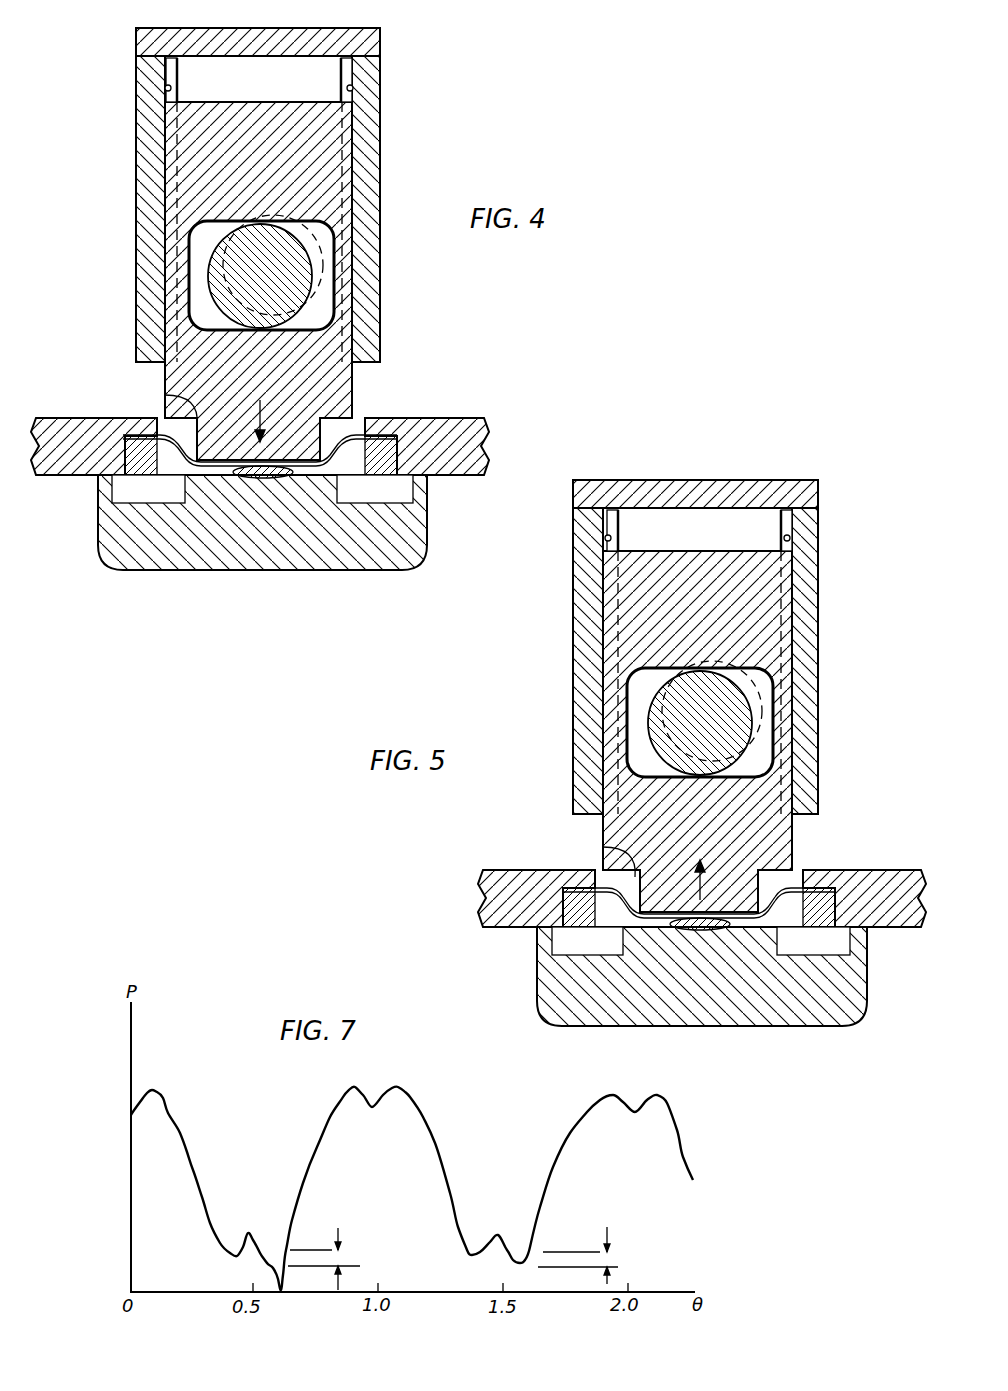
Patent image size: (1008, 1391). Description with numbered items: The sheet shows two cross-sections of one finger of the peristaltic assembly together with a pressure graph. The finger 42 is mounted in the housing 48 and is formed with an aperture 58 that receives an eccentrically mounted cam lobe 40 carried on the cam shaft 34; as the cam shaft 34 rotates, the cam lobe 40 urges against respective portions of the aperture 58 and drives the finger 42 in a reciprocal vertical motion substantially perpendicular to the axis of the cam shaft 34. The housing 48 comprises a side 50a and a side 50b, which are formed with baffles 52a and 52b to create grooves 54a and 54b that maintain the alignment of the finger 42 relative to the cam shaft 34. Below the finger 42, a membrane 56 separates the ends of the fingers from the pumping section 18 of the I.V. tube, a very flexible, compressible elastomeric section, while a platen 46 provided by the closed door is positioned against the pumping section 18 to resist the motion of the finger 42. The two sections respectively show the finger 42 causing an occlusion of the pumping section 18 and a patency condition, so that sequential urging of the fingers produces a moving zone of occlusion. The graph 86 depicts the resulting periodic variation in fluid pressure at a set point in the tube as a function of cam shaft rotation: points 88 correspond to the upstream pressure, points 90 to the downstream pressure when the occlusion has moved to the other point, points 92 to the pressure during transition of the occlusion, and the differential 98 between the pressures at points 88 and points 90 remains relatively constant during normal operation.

In FIG. 4, the pumping section 18 is at (270, 477).
In FIG. 5, the pumping section 18 is at (698, 971).
In FIG. 4, the cam shaft 34 is at (330, 262).
In FIG. 5, the cam shaft 34 is at (768, 705).
In FIG. 4, the cam lobe 40 is at (288, 322).
In FIG. 5, the cam lobe 40 is at (756, 723).
In FIG. 4, the finger 42 is at (328, 397).
In FIG. 5, the finger 42 is at (720, 731).
In FIG. 4, the platen 46 is at (205, 488).
In FIG. 5, the platen 46 is at (702, 994).
In FIG. 4, the housing 48 is at (146, 36).
In FIG. 5, the housing 48 is at (695, 474).
In FIG. 4, the side 50a is at (145, 178).
In FIG. 5, the side 50a is at (559, 661).
In FIG. 4, the side 50b is at (365, 172).
In FIG. 5, the side 50b is at (839, 661).
In FIG. 4, the baffle 52a is at (167, 60).
In FIG. 5, the baffle 52a is at (561, 530).
In FIG. 4, the baffle 52b is at (345, 70).
In FIG. 5, the baffle 52b is at (833, 522).
In FIG. 4, the groove 54a is at (168, 88).
In FIG. 5, the groove 54a is at (551, 558).
In FIG. 4, the groove 54b is at (351, 89).
In FIG. 5, the groove 54b is at (835, 541).
In FIG. 4, the membrane 56 is at (180, 398).
In FIG. 5, the membrane 56 is at (587, 851).
In FIG. 4, the aperture 58 is at (195, 245).
In FIG. 5, the aperture 58 is at (649, 722).
In FIG. 7, the graph 86 is at (176, 1127).
In FIG. 7, the points 88 is at (237, 1257).
In FIG. 7, the points 90 is at (281, 1290).
In FIG. 7, the points 92 is at (250, 1233).
In FIG. 7, the differential 98 is at (343, 1259).